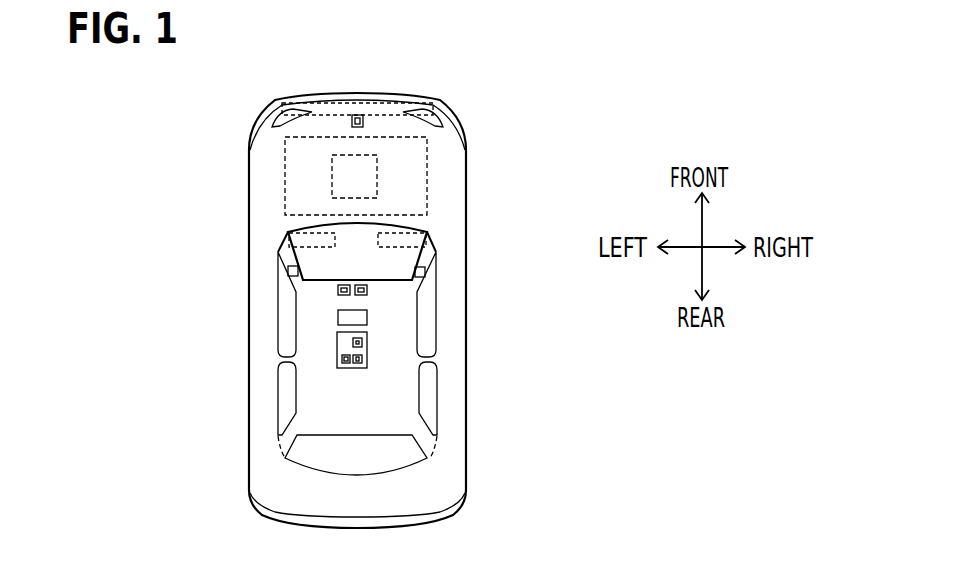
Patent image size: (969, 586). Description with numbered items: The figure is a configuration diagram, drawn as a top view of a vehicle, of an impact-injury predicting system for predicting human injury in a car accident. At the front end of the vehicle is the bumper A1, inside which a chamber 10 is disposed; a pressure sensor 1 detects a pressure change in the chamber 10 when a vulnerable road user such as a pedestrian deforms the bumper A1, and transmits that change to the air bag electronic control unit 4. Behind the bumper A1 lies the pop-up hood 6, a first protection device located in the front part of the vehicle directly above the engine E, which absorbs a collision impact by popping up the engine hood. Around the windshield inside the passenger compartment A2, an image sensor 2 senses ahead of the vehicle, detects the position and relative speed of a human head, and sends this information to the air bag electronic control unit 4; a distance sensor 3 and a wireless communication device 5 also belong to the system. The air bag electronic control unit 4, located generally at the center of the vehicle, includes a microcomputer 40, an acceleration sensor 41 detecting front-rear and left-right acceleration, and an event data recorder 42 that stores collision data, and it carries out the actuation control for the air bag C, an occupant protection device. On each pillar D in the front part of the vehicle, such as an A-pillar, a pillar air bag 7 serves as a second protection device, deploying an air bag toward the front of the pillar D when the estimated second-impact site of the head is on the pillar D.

The pressure sensor 1 is at (358, 114).
The bumper A1 is at (382, 95).
The chamber 10 is at (412, 103).
The pop-up hood 6 is at (427, 170).
The engine E is at (342, 155).
The air bag C is at (281, 252).
The passenger compartment A2 is at (277, 246).
The pillar D is at (282, 252).
The pillar air bag 7 is at (290, 272).
The image sensor 2 is at (338, 290).
The distance sensor 3 is at (368, 288).
The wireless communication device 5 is at (368, 318).
The air bag electronic control unit 4 is at (337, 333).
The event data recorder 42 is at (368, 340).
The microcomputer 40 is at (340, 360).
The acceleration sensor 41 is at (368, 356).